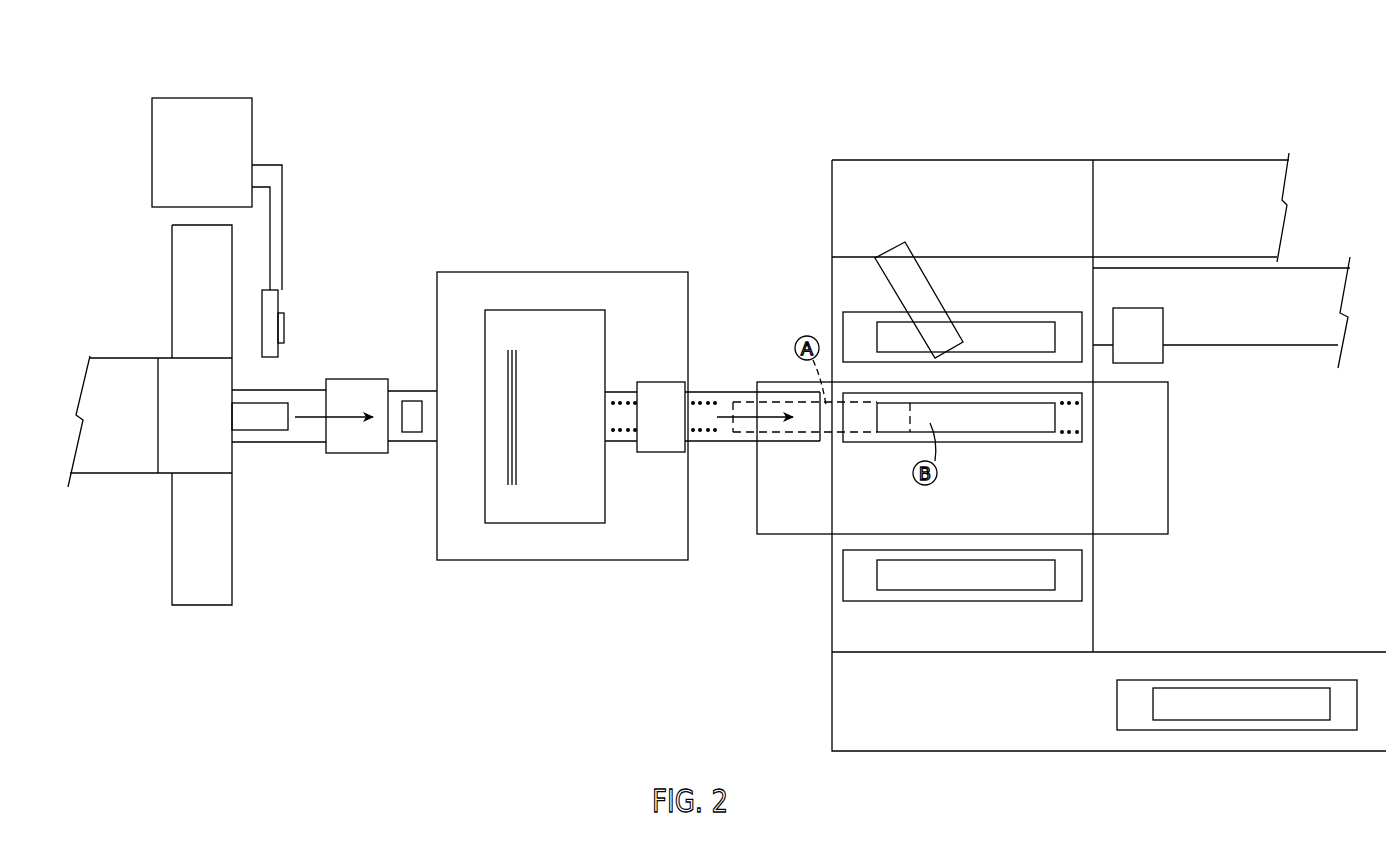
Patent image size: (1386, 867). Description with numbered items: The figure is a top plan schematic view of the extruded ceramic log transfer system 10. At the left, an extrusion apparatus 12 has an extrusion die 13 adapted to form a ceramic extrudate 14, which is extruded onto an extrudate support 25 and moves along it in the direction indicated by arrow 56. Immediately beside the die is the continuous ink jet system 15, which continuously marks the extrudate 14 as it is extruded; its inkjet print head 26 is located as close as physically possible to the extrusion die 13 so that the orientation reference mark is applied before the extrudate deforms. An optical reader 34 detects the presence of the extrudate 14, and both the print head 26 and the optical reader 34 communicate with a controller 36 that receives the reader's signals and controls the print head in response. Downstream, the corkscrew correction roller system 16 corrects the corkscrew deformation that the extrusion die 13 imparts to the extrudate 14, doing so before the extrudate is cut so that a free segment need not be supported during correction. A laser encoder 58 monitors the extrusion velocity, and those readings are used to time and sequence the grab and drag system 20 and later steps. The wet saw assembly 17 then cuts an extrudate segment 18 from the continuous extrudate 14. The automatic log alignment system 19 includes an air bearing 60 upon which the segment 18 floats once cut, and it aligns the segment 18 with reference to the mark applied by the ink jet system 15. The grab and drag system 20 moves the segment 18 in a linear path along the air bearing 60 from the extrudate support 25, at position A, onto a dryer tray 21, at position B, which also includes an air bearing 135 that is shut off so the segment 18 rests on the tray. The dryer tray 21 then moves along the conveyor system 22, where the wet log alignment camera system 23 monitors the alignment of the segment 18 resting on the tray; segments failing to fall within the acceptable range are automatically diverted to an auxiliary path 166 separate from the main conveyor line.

The extruded ceramic log transfer system 10 is at (188, 53).
The extrusion apparatus 12 is at (105, 346).
The extrusion die 13 is at (172, 358).
The ceramic extrudate 14 is at (263, 412).
The continuous ink jet system 15 is at (318, 146).
The corkscrew correction roller system 16 is at (356, 367).
The wet saw assembly 17 is at (553, 299).
The extrudate segment 18 is at (800, 428).
The automatic log alignment system 19 is at (666, 367).
The grab and drag system 20 is at (803, 311).
The dryer tray 21 is at (1065, 443).
The conveyor system 22 is at (1051, 145).
The wet log alignment camera system 23 is at (1178, 327).
The extrudate support 25 is at (278, 437).
The inkjet print head 26 is at (272, 298).
The optical reader 34 is at (285, 330).
The controller 36 is at (162, 150).
The arrow 56 is at (333, 418).
The laser encoder 58 is at (418, 437).
The air bearing 60 is at (697, 400).
The air bearing 135 is at (1085, 398).
The auxiliary path 166 is at (1267, 348).